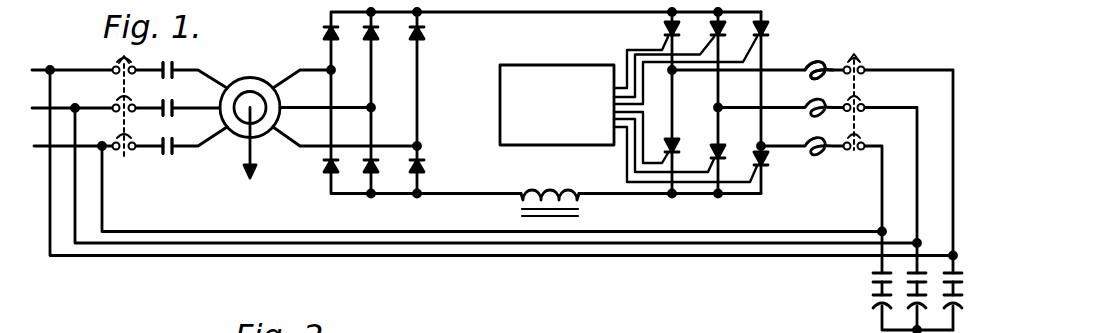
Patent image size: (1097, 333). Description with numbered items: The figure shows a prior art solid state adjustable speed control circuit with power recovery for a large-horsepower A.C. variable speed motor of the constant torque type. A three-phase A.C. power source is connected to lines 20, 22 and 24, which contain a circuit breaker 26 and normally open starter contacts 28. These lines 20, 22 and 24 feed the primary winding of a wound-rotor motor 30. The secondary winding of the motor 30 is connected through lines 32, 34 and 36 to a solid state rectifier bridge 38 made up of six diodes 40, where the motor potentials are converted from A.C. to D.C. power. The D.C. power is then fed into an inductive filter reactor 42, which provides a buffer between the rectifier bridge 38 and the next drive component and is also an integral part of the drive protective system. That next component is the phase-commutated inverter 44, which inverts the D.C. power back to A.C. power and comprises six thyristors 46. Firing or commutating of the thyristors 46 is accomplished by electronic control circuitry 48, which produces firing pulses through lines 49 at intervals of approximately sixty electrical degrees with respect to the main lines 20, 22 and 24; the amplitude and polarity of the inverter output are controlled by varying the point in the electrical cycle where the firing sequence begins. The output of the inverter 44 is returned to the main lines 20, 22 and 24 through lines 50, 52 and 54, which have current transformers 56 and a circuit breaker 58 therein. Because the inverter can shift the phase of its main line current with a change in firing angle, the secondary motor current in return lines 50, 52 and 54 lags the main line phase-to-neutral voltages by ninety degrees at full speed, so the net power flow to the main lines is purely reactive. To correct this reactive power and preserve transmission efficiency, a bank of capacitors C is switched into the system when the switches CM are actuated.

The line 20 is at (71, 66).
The line 22 is at (58, 108).
The line 24 is at (68, 149).
The circuit breaker 26 is at (124, 154).
The normally open starter contacts 28 is at (173, 153).
The wound-rotor motor 30 is at (229, 84).
The line 32 is at (278, 85).
The line 34 is at (298, 113).
The line 36 is at (288, 133).
The rectifier bridge 38 is at (318, 29).
The diodes 40 is at (378, 29).
The inductive filter reactor 42 is at (494, 167).
The phase-commutated inverter 44 is at (768, 29).
The thyristors 46 is at (662, 34).
The electronic control circuitry 48 is at (506, 70).
The lines 49 is at (624, 51).
The line 50 is at (908, 64).
The line 52 is at (890, 104).
The line 54 is at (880, 194).
The current transformers 56 is at (813, 54).
The circuit breaker 58 is at (858, 53).
The switches CM is at (862, 278).
The capacitors C is at (873, 305).